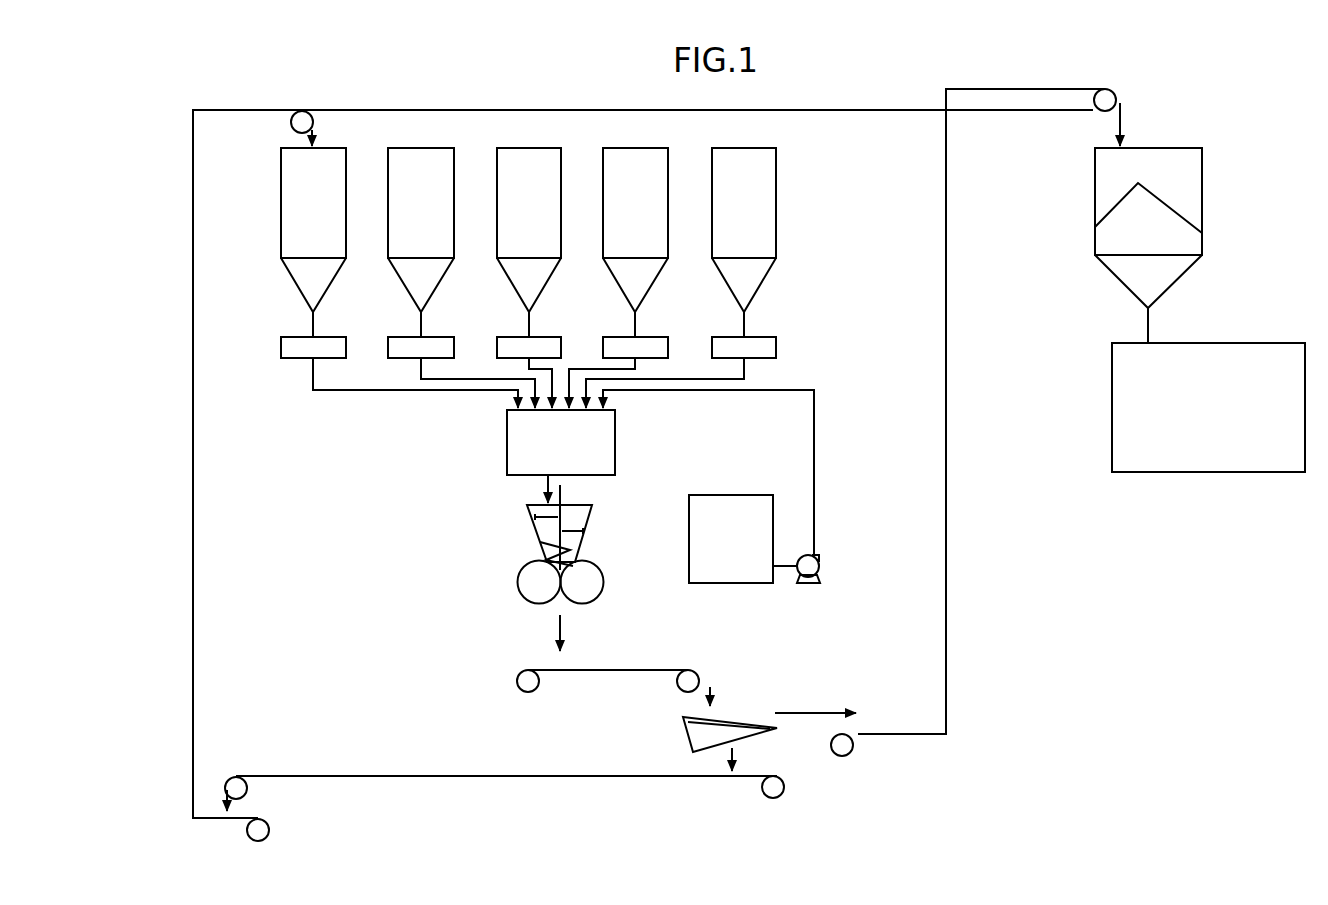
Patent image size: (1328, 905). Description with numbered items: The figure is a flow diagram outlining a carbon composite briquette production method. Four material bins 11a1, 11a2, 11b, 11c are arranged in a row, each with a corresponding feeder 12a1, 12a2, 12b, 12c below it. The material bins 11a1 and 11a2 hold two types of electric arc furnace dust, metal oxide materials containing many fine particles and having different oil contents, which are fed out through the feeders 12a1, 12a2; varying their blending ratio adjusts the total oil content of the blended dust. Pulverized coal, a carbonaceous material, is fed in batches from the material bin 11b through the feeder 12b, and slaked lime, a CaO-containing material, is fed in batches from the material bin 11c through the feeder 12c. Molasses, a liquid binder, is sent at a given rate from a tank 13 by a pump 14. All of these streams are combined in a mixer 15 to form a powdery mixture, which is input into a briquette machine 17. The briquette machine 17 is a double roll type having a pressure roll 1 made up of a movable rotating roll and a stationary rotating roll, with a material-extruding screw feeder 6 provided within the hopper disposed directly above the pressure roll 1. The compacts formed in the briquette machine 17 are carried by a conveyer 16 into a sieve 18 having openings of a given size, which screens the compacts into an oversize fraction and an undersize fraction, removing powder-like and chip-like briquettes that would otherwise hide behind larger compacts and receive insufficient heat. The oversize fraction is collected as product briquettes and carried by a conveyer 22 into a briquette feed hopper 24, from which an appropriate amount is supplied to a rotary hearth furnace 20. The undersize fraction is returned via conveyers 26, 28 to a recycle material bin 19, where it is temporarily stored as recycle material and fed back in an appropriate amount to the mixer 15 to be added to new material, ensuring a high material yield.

The pressure roll 1 is at (614, 578).
The material-extruding screw feeder 6 is at (553, 550).
The material bin 11a1 is at (442, 128).
The material bin 11a2 is at (549, 128).
The material bin 11b is at (640, 148).
The material bin 11c is at (748, 148).
The feeder 12a1 is at (425, 337).
The feeder 12a2 is at (535, 337).
The feeder 12b is at (645, 337).
The feeder 12c is at (752, 337).
The tank 13 is at (740, 495).
The pump 14 is at (820, 563).
The mixer 15 is at (615, 428).
The conveyer 16 is at (590, 670).
The briquette machine 17 is at (597, 527).
The sieve 18 is at (722, 718).
The recycle material bin 19 is at (330, 148).
The rotary hearth furnace 20 is at (1263, 343).
The conveyer 22 is at (947, 490).
The briquette feed hopper 24 is at (1175, 148).
The conveyer 26 is at (398, 776).
The conveyer 28 is at (193, 617).